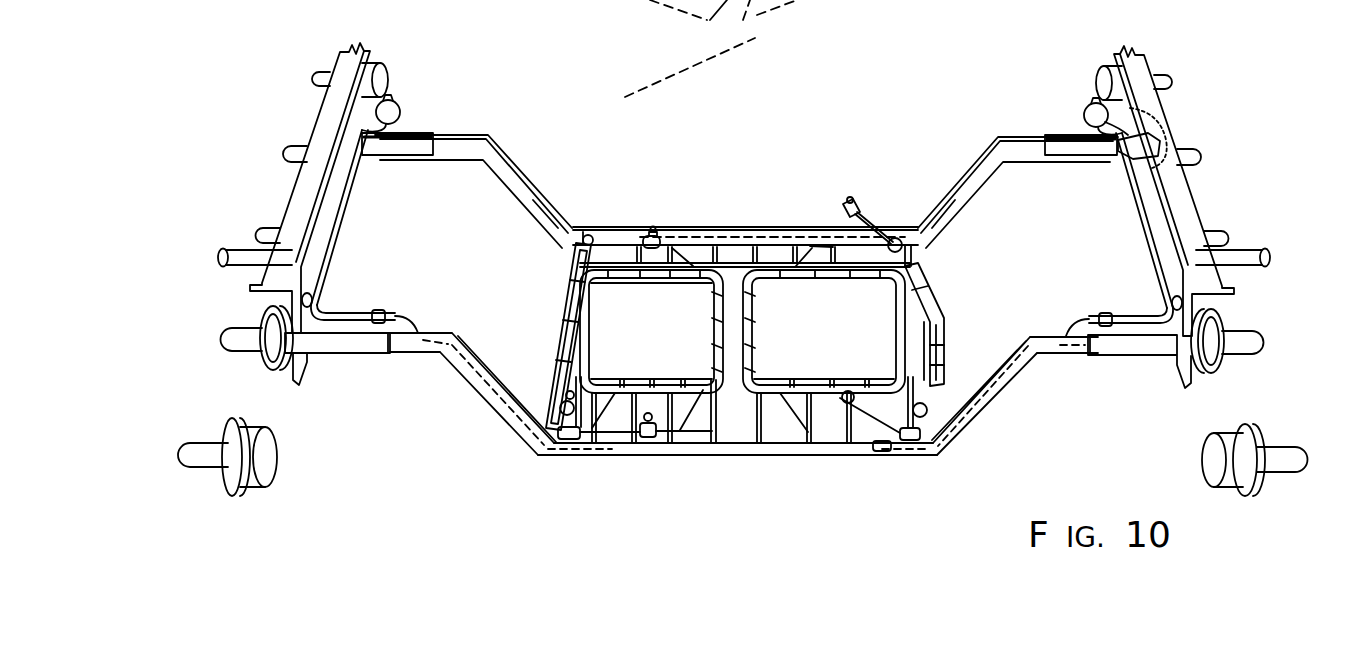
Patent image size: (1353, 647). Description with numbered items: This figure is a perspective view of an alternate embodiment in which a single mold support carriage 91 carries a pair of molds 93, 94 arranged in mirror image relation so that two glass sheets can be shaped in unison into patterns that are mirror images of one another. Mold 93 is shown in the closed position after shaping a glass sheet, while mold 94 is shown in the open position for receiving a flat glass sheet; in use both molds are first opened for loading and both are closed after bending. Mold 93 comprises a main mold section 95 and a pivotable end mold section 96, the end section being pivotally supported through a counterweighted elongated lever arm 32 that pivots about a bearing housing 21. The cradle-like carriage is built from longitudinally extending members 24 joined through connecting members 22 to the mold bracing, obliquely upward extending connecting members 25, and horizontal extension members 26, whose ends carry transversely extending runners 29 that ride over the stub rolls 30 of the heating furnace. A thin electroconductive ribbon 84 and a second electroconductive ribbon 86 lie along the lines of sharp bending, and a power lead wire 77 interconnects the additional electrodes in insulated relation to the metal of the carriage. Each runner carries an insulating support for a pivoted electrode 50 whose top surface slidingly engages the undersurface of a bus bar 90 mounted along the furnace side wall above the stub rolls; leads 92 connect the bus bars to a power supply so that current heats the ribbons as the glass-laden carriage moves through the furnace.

The bearing housing 21 is at (550, 449).
The connecting member 22 is at (627, 412).
The longitudinally extending member 24 is at (703, 227).
The obliquely upward extending connecting member 25 is at (513, 172).
The horizontal extension member 26 is at (407, 347).
The transversely extending runner 29 is at (297, 298).
The stub roll 30 is at (255, 428).
The elongated lever arm 32 is at (652, 234).
The pivoted electrode 50 is at (1158, 139).
The power lead wire 77 is at (733, 260).
The electroconductive ribbon 84 is at (583, 320).
The electroconductive ribbon 86 is at (900, 317).
The bus bar 90 is at (350, 62).
The mold support carriage 91 is at (758, 456).
The lead 92 is at (1236, 268).
The mold 93 is at (613, 370).
The mold 94 is at (768, 373).
The main mold section 95 is at (665, 283).
The pivotable end mold section 96 is at (555, 297).